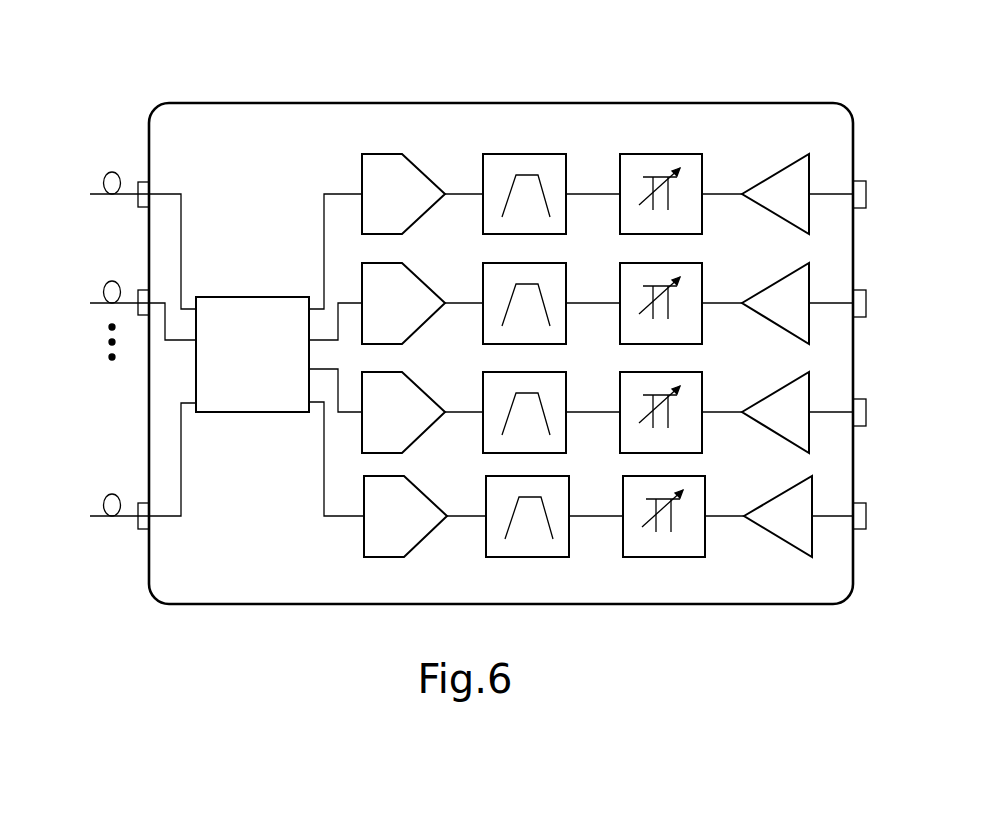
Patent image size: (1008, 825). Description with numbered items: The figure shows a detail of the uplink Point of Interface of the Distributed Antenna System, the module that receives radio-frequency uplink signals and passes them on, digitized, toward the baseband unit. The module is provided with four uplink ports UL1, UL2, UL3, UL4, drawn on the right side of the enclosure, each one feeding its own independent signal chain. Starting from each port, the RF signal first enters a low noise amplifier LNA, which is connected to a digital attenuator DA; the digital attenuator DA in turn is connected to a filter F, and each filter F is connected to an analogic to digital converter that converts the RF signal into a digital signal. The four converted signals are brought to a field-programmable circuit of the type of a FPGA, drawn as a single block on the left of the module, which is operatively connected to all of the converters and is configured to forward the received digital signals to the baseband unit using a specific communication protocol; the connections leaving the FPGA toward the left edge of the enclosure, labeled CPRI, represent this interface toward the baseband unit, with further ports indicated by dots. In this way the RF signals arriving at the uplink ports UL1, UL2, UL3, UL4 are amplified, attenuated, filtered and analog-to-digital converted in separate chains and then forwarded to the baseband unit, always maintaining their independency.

The CPRI interface CPRI is at (103, 350).
The field-programmable gate array FPGA is at (280, 355).
The filter F is at (553, 340).
The digital attenuator DA is at (682, 340).
The low noise amplifier LNA is at (797, 340).
The uplink port UL1 is at (887, 194).
The uplink port UL2 is at (887, 303).
The uplink port UL3 is at (887, 412).
The uplink port UL4 is at (887, 516).